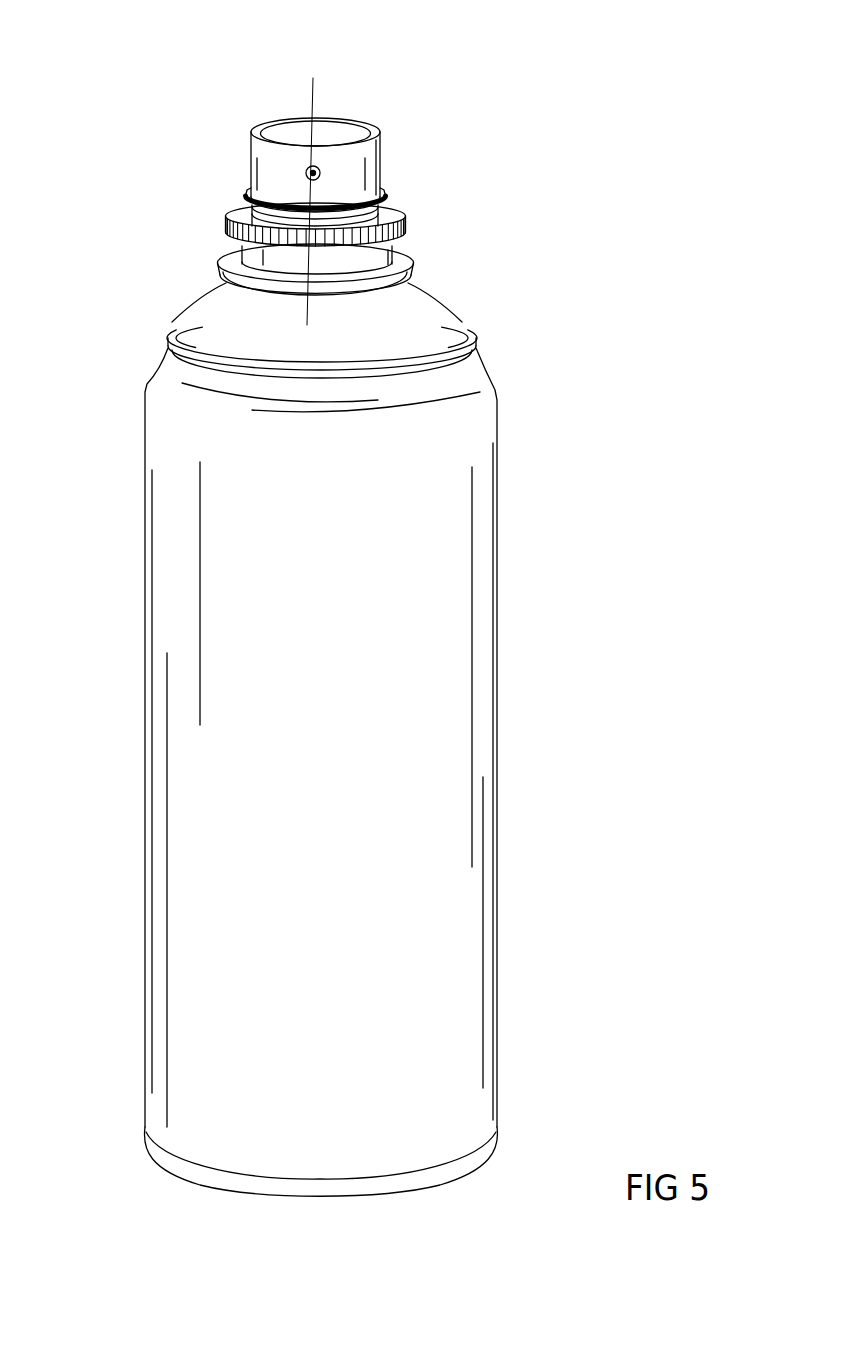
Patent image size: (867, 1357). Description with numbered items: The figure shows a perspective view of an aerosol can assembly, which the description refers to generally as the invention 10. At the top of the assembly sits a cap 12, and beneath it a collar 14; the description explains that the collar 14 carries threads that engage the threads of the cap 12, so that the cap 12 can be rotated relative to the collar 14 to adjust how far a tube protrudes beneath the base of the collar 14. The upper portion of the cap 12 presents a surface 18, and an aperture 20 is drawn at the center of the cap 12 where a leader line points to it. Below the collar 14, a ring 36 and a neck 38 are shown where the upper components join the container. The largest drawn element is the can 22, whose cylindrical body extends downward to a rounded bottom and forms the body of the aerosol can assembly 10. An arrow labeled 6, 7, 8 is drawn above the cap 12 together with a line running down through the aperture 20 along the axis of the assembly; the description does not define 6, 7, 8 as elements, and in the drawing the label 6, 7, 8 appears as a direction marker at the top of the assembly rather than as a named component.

The aerosol can assembly 10 is at (305, 325).
The cap 12 is at (383, 173).
The collar 14 is at (410, 223).
The surface 18 is at (320, 130).
The aperture 20 is at (322, 170).
The can 22 is at (473, 422).
The ring 36 is at (418, 258).
The neck 38 is at (413, 282).
The view direction for FIG. 6 is at (257, 166).
The view direction for FIG. 7 is at (257, 166).
The view direction for FIG. 8 is at (313, 78).